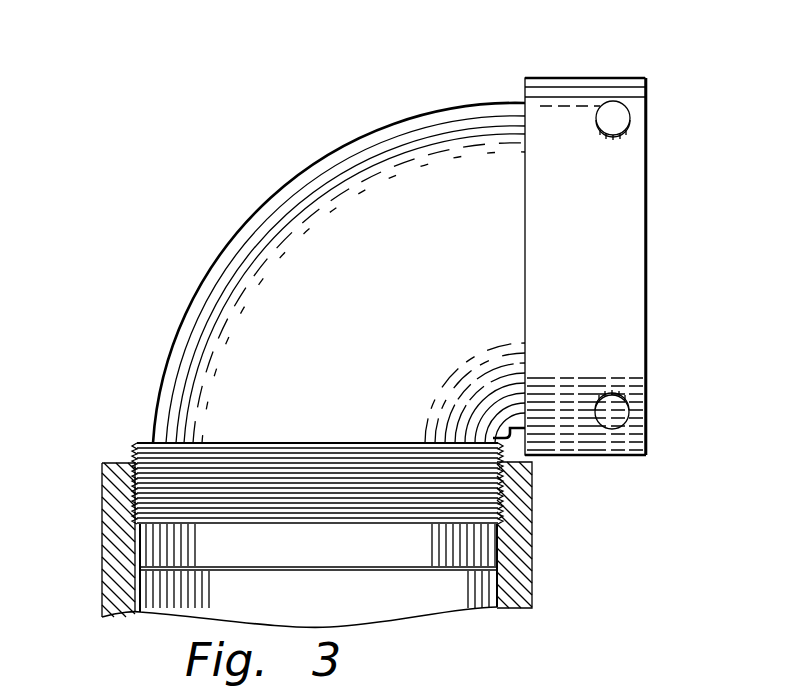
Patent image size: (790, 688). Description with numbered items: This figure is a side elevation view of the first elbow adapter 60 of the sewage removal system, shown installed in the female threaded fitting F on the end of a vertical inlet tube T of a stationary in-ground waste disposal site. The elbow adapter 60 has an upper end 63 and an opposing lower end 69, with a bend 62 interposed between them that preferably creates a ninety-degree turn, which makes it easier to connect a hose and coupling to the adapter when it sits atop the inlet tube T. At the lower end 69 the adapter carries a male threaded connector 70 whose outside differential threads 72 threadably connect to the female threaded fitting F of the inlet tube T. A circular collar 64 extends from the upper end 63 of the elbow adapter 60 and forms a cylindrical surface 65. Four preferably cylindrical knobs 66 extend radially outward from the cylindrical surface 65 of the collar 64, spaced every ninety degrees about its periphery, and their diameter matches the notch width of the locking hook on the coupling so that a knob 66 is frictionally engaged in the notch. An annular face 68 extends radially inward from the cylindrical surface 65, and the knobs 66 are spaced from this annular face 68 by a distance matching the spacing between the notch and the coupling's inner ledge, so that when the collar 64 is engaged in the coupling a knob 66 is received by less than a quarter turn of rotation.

The elbow adapter 60 is at (329, 273).
The bend 62 is at (233, 238).
The upper end 63 is at (523, 101).
The circular collar 64 is at (525, 78).
The cylindrical surface 65 is at (562, 112).
The cylindrical knobs 66 is at (631, 118).
The annular face 68 is at (592, 234).
The lower end 69 is at (152, 441).
The male threaded connector 70 is at (133, 446).
The outside differential threads 72 is at (263, 461).
The female threaded fitting F is at (102, 557).
The inlet tube T is at (532, 560).